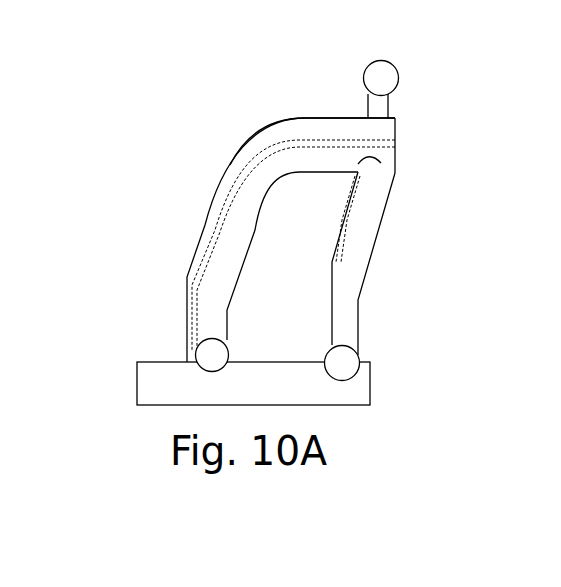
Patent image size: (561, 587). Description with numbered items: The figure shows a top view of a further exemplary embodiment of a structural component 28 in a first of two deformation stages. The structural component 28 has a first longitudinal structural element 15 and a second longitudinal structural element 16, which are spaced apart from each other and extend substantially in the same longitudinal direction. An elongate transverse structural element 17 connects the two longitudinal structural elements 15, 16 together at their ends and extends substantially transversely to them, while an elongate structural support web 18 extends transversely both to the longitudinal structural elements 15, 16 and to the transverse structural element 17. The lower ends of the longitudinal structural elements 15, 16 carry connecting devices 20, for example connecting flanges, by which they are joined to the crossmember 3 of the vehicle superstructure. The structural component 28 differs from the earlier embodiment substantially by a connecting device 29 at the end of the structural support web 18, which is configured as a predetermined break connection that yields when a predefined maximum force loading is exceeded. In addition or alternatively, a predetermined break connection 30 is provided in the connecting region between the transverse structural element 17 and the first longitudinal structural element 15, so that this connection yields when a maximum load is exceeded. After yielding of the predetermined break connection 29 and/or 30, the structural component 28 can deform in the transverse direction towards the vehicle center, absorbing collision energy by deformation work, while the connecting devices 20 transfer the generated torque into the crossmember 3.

The structural component 28 is at (88, 86).
The crossmember 3 is at (167, 382).
The first longitudinal structural element 15 is at (352, 278).
The second longitudinal structural element 16 is at (210, 258).
The transverse structural element 17 is at (299, 128).
The structural support web 18 is at (390, 120).
The connecting device 20 is at (208, 353).
The connecting device 29 is at (390, 80).
The predetermined break connection 30 is at (368, 195).